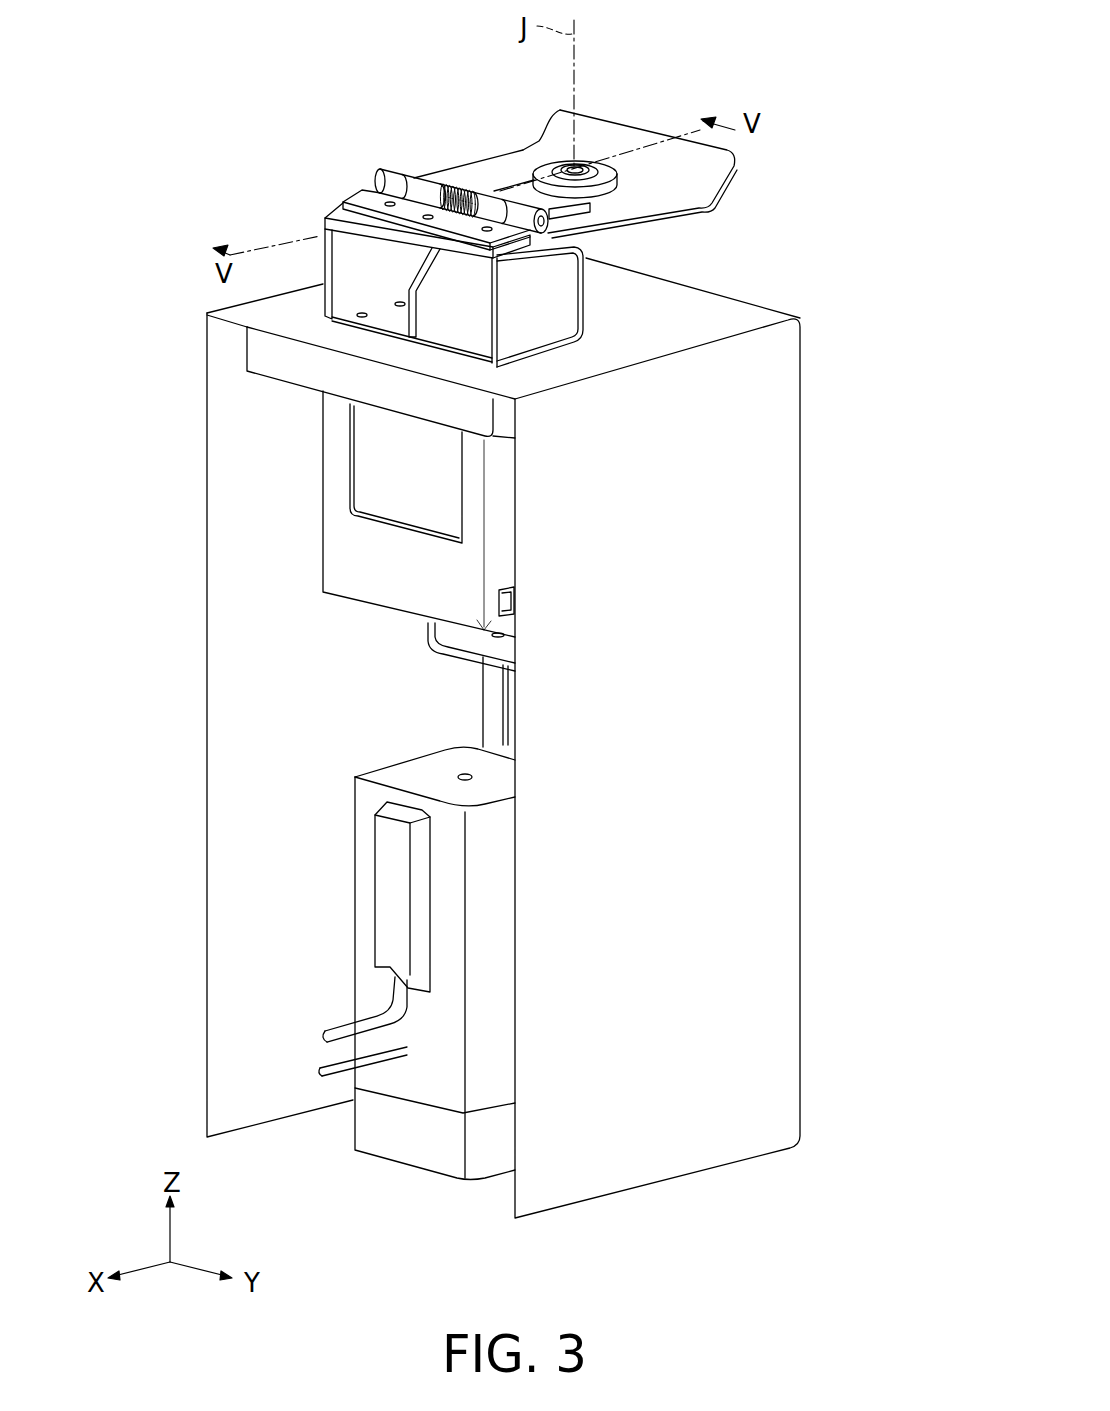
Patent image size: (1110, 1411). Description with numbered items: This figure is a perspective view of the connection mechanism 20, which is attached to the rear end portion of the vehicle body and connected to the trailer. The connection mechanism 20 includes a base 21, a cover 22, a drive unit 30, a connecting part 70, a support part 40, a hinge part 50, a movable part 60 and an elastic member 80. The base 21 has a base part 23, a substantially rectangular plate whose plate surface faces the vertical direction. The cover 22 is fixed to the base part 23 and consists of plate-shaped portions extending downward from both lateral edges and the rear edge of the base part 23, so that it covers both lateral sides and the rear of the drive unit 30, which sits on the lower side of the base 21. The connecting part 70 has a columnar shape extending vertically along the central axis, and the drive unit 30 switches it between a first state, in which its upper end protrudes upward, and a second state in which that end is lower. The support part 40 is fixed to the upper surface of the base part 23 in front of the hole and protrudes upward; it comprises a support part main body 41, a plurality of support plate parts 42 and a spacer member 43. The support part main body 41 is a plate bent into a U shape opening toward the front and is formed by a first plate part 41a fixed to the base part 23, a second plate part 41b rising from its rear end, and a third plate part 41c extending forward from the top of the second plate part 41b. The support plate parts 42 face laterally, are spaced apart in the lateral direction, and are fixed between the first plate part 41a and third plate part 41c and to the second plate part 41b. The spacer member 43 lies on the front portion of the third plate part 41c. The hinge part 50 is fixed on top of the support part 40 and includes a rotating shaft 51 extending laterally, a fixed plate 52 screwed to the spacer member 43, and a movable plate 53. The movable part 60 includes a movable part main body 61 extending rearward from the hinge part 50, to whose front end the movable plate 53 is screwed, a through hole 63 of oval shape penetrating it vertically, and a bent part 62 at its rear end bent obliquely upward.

The connection mechanism 20 is at (779, 149).
The base 21 is at (387, 405).
The cover 22 is at (790, 578).
The base part 23 is at (323, 385).
The drive unit 30 is at (356, 853).
The support part 40 is at (317, 211).
The support part main body 41 is at (882, 297).
The first plate part 41a is at (505, 334).
The second plate part 41b is at (584, 310).
The third plate part 41c is at (615, 264).
The support plate parts 42 is at (507, 332).
The spacer member 43 is at (341, 209).
The hinge part 50 is at (383, 167).
The rotating shaft 51 is at (556, 203).
The fixed plate 52 is at (402, 205).
The movable plate 53 is at (487, 194).
The movable part 60 is at (648, 134).
The movable part main body 61 is at (515, 160).
The bent part 62 is at (588, 121).
The through hole 63 is at (616, 178).
The connecting part 70 is at (590, 163).
The elastic member 80 is at (447, 183).